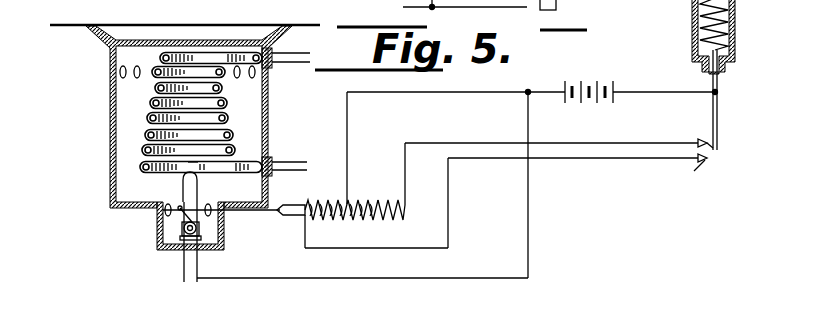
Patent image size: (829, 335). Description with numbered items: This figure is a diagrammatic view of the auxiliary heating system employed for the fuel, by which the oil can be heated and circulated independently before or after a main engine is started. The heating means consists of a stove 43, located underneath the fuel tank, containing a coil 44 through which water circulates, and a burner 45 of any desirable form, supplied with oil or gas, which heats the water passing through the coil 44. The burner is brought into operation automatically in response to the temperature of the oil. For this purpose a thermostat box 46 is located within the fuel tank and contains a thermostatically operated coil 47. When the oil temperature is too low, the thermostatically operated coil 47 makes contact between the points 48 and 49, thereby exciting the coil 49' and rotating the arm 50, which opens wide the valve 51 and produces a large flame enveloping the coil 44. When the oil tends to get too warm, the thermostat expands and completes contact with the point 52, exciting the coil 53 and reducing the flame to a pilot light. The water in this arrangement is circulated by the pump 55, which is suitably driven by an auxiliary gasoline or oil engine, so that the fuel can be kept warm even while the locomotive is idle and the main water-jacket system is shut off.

The stove 43 is at (110, 123).
The coil 44 is at (197, 126).
The burner 45 is at (197, 184).
The thermostat box 46 is at (692, 27).
The thermostatically operated coil 47 is at (729, 29).
The contact point 48 is at (559, 130).
The contact point 49 is at (599, 163).
The coil 49' is at (382, 181).
The arm 50 is at (182, 227).
The valve 51 is at (200, 235).
The contact point 52 is at (689, 179).
The coil 53 is at (362, 170).
The pump 55 is at (195, 163).